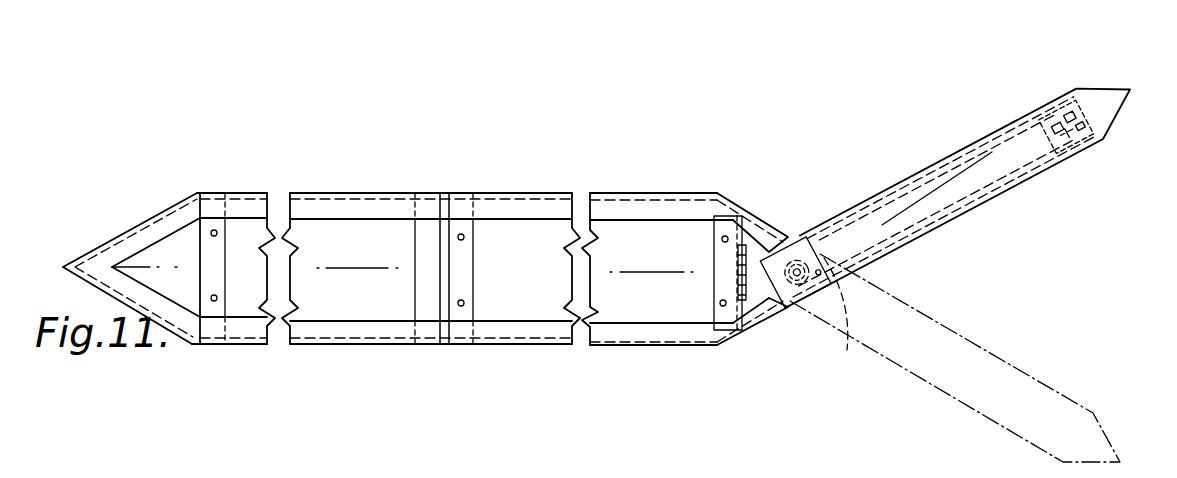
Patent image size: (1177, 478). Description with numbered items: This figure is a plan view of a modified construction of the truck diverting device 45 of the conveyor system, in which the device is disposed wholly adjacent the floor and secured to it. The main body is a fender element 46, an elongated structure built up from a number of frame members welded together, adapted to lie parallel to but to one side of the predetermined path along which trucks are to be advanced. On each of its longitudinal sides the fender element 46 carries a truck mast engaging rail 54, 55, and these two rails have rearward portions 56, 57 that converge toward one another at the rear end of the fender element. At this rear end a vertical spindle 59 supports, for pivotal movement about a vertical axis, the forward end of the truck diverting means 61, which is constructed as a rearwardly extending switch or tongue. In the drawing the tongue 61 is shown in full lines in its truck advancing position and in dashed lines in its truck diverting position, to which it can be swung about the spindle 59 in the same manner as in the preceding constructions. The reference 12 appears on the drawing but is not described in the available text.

The trailer frame 12 is at (63, 267).
The truck diverting device 45 is at (580, 190).
The fender element 46 is at (615, 335).
The truck mast engaging rail 54 is at (382, 344).
The truck mast engaging rail 55 is at (380, 193).
The rearward portion of rail 56 is at (753, 327).
The rearward portion of rail 57 is at (753, 217).
The vertical spindle 59 is at (955, 358).
The truck diverting means 61 is at (987, 192).